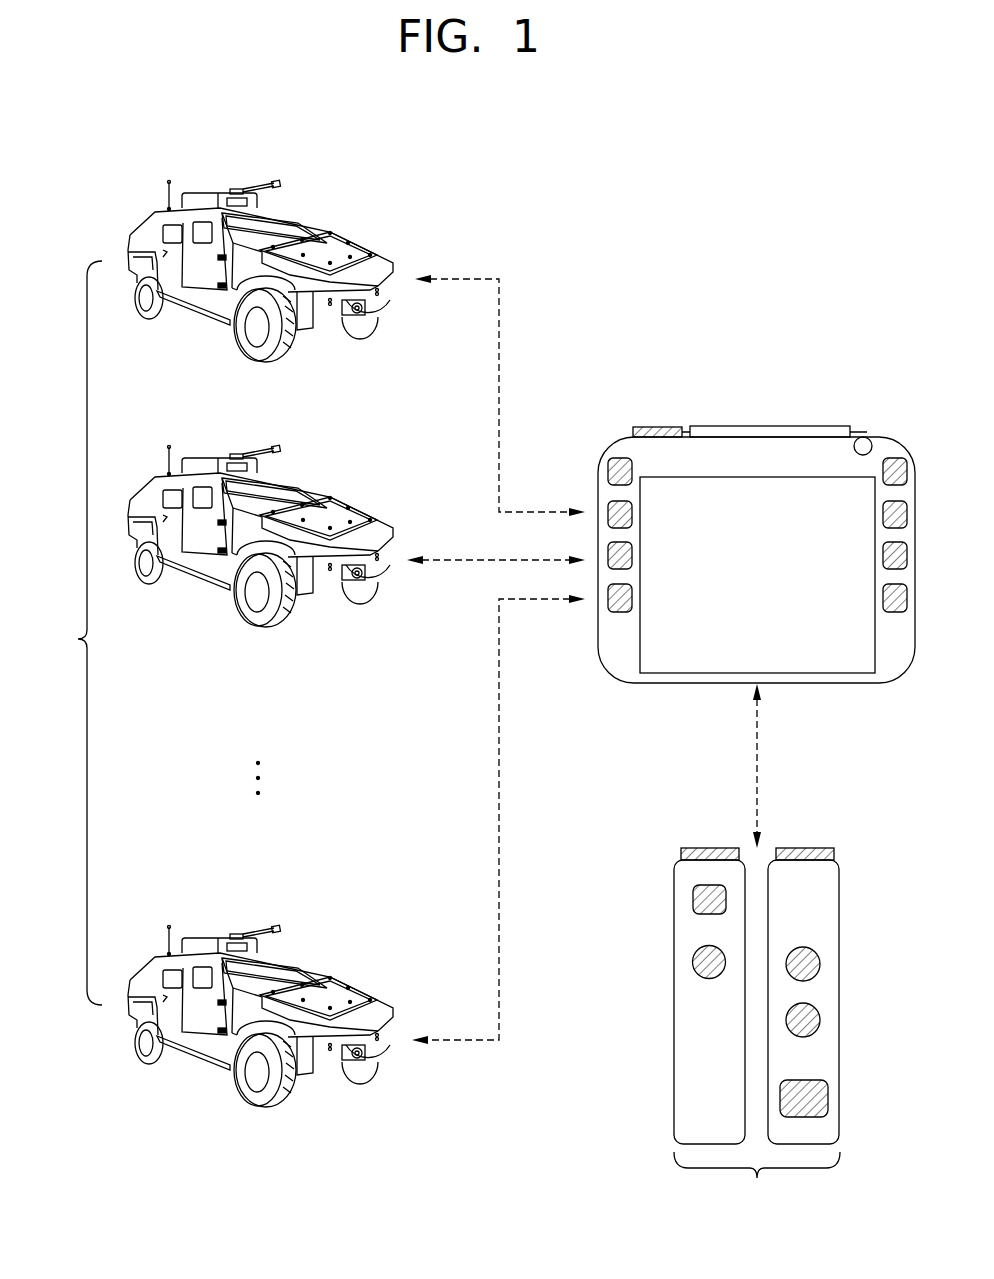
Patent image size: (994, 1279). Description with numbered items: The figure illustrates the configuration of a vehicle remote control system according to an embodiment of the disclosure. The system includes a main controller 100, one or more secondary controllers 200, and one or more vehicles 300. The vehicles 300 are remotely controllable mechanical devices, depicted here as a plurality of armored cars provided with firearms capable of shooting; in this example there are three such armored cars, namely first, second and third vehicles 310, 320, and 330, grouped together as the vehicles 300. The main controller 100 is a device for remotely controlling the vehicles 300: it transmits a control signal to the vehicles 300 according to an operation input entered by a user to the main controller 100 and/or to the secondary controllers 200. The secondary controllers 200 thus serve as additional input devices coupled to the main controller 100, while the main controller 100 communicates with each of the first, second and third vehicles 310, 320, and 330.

The main controller 100 is at (775, 403).
The secondary controller 200 is at (757, 1029).
The vehicles 300 is at (66, 633).
The first vehicle 310 is at (360, 227).
The second vehicle 320 is at (360, 492).
The third vehicle 330 is at (360, 972).